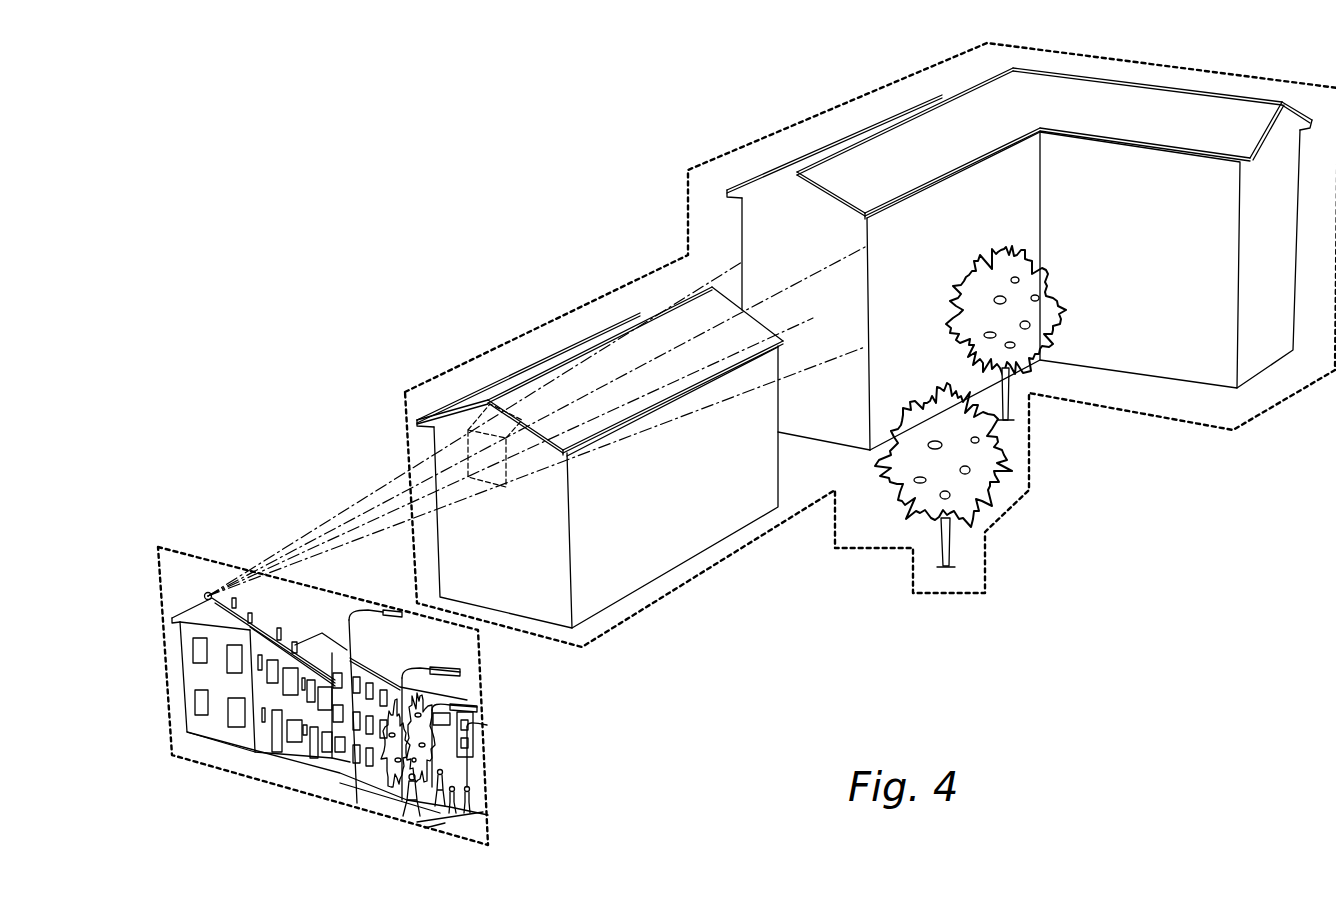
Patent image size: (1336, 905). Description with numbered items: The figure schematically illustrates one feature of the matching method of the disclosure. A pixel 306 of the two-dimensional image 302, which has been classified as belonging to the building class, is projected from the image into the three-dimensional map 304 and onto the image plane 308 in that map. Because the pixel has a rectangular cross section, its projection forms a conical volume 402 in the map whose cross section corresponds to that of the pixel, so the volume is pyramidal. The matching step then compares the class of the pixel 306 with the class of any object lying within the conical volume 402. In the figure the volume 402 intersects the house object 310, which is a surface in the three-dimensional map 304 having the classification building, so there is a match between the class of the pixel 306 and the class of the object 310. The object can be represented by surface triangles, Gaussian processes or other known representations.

The 2D-image 302 is at (485, 787).
The 3D-map 304 is at (1052, 532).
The pixel 306 is at (207, 591).
The image plane 308 is at (1170, 420).
The object 310 is at (467, 420).
The conical volume 402 is at (323, 517).